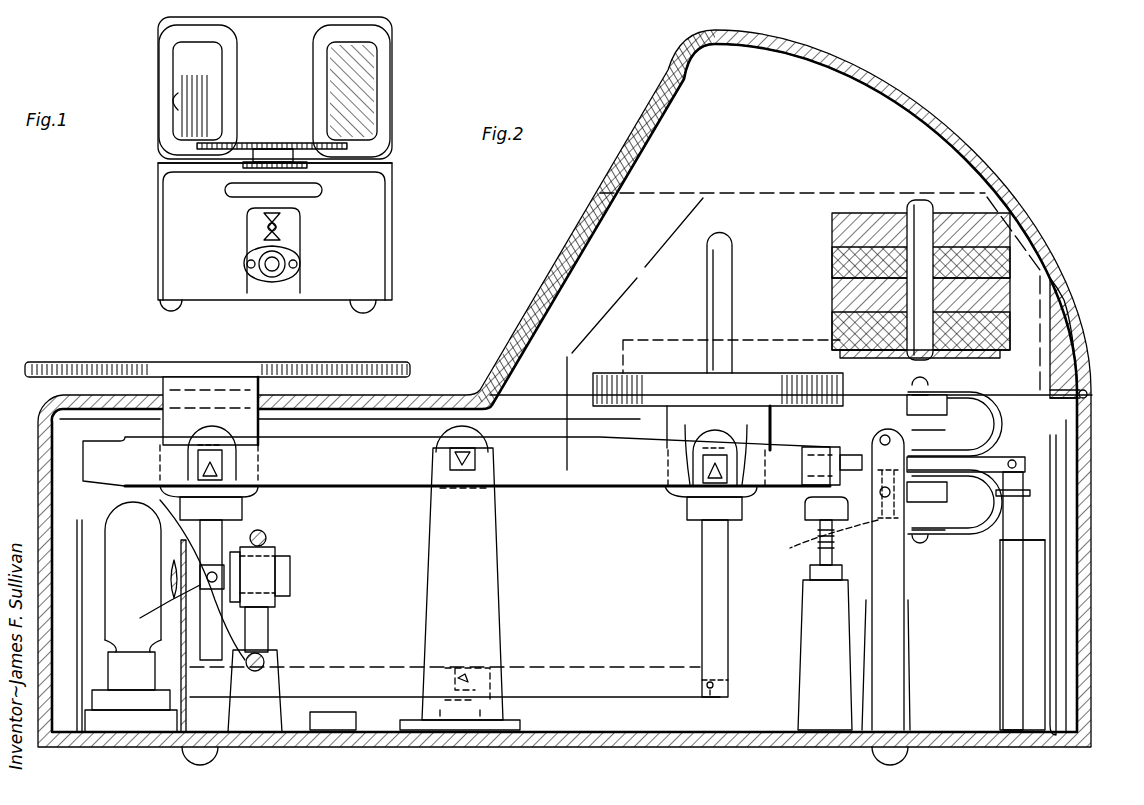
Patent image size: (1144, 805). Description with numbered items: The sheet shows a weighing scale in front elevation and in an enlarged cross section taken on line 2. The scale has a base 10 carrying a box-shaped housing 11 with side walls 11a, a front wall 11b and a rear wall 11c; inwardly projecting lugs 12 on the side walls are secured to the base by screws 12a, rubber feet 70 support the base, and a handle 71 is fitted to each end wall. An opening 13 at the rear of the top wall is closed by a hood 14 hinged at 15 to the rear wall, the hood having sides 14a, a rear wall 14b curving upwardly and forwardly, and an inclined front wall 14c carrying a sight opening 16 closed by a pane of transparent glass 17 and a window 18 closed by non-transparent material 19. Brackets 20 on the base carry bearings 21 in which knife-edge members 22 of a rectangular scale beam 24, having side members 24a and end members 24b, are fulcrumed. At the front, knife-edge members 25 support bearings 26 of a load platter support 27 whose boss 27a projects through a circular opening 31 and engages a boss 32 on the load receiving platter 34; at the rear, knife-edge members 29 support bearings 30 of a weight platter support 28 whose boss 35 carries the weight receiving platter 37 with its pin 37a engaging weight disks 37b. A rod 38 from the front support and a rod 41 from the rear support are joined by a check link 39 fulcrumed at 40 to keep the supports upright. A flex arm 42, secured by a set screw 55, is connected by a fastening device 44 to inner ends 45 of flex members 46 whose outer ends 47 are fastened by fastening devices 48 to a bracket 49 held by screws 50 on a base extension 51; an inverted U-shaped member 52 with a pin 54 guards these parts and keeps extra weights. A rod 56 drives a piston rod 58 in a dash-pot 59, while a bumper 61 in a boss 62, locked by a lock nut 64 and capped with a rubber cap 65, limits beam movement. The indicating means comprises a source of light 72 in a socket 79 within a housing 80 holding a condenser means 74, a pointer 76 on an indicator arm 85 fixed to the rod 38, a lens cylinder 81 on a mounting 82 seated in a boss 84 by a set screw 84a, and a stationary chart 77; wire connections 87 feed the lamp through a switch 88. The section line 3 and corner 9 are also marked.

In FIG. 1, the section line 2 is at (348, 325).
In FIG. 2, the section line 3 is at (803, 408).
In FIG. 2, the housing corner 9 is at (35, 398).
In FIG. 2, the base 10 is at (640, 748).
In FIG. 1, the housing 11 is at (148, 243).
In FIG. 2, the side walls 11a is at (234, 626).
In FIG. 1, the front wall 11b is at (372, 234).
In FIG. 2, the front wall 11b is at (42, 748).
In FIG. 2, the rear wall 11c is at (478, 385).
In FIG. 2, the lugs 12 is at (357, 720).
In FIG. 2, the screws 12a is at (350, 752).
In FIG. 2, the opening 13 is at (527, 394).
In FIG. 1, the hood 14 is at (150, 49).
In FIG. 2, the hood 14 is at (1019, 152).
In FIG. 2, the sides of the hood 14a is at (782, 124).
In FIG. 2, the rear wall of the hood 14b is at (905, 88).
In FIG. 1, the front wall of the hood 14c is at (278, 70).
In FIG. 2, the front wall of the hood 14c is at (658, 128).
In FIG. 2, the hinged connection 15 is at (1088, 392).
In FIG. 1, the window or sight opening 16 is at (365, 97).
In FIG. 2, the window or sight opening 16 is at (600, 182).
In FIG. 1, the pane of transparent glass 17 is at (366, 58).
In FIG. 2, the pane of transparent glass 17 is at (570, 238).
In FIG. 1, the window 18 is at (176, 112).
In FIG. 1, the non-transparent material 19 is at (198, 90).
In FIG. 2, the brackets 20 is at (490, 573).
In FIG. 2, the bearing 21 is at (468, 470).
In FIG. 2, the knife-edge members 22 is at (455, 458).
In FIG. 2, the scale beam 24 is at (623, 498).
In FIG. 2, the side members 24a is at (566, 470).
In FIG. 2, the end members 24b is at (84, 478).
In FIG. 2, the knife-edge member 25 is at (244, 506).
In FIG. 2, the bearings 26 is at (203, 448).
In FIG. 2, the load platter support 27 is at (244, 520).
In FIG. 2, the boss 27a is at (265, 437).
In FIG. 2, the weight platter support 28 is at (668, 430).
In FIG. 2, the knife-edge members 29 is at (710, 490).
In FIG. 2, the bearings 30 is at (740, 496).
In FIG. 2, the circular opening 31 is at (165, 388).
In FIG. 2, the boss 32 is at (205, 392).
In FIG. 1, the load receiving platter 34 is at (262, 142).
In FIG. 2, the load receiving platter 34 is at (262, 376).
In FIG. 2, the boss 35 is at (716, 446).
In FIG. 2, the weight receiving platter 37 is at (660, 380).
In FIG. 2, the pin 37a is at (736, 268).
In FIG. 2, the weight disks 37b is at (832, 240).
In FIG. 2, the rod 38 is at (240, 630).
In FIG. 2, the check link 39 is at (362, 672).
In FIG. 2, the fulcrum 40 is at (478, 681).
In FIG. 2, the rod 41 is at (706, 622).
In FIG. 2, the flex arm 42 is at (856, 470).
In FIG. 2, the fastening device 44 is at (928, 456).
In FIG. 2, the inner ends 45 is at (955, 463).
In FIG. 2, the flex members 46 is at (1016, 430).
In FIG. 2, the outer ends 47 is at (941, 606).
In FIG. 2, the fastening devices 48 is at (912, 388).
In FIG. 2, the bracket 49 is at (821, 538).
In FIG. 2, the screws 50 is at (880, 440).
In FIG. 2, the extension 51 is at (895, 648).
In FIG. 2, the inverted U-shaped member 52 is at (872, 362).
In FIG. 2, the pin 54 is at (920, 200).
In FIG. 2, the set screw 55 is at (822, 444).
In FIG. 2, the rod 56 is at (1006, 462).
In FIG. 2, the piston rod 58 is at (1024, 520).
In FIG. 2, the dash-pot 59 is at (1022, 635).
In FIG. 2, the bumper 61 is at (836, 540).
In FIG. 2, the boss 62 is at (812, 630).
In FIG. 2, the lock nut 64 is at (810, 574).
In FIG. 2, the rubber cap 65 is at (810, 497).
In FIG. 1, the rubber feet 70 is at (160, 305).
In FIG. 2, the rubber feet 70 is at (185, 764).
In FIG. 1, the handle 71 is at (235, 195).
In FIG. 2, the source of light 72 is at (133, 577).
In FIG. 2, the condenser means 74 is at (174, 578).
In FIG. 2, the pointer 76 is at (170, 598).
In FIG. 2, the stationary chart or screen 77 is at (1038, 670).
In FIG. 2, the socket 79 is at (131, 692).
In FIG. 2, the housing 80 is at (100, 578).
In FIG. 2, the cylinder 81 is at (280, 560).
In FIG. 2, the mounting 82 is at (270, 580).
In FIG. 2, the boss 84 is at (272, 746).
In FIG. 2, the set screw 84a is at (272, 666).
In FIG. 2, the indicator arm 85 is at (189, 571).
In FIG. 1, the wire connections 87 is at (281, 277).
In FIG. 1, the switch 88 is at (283, 229).